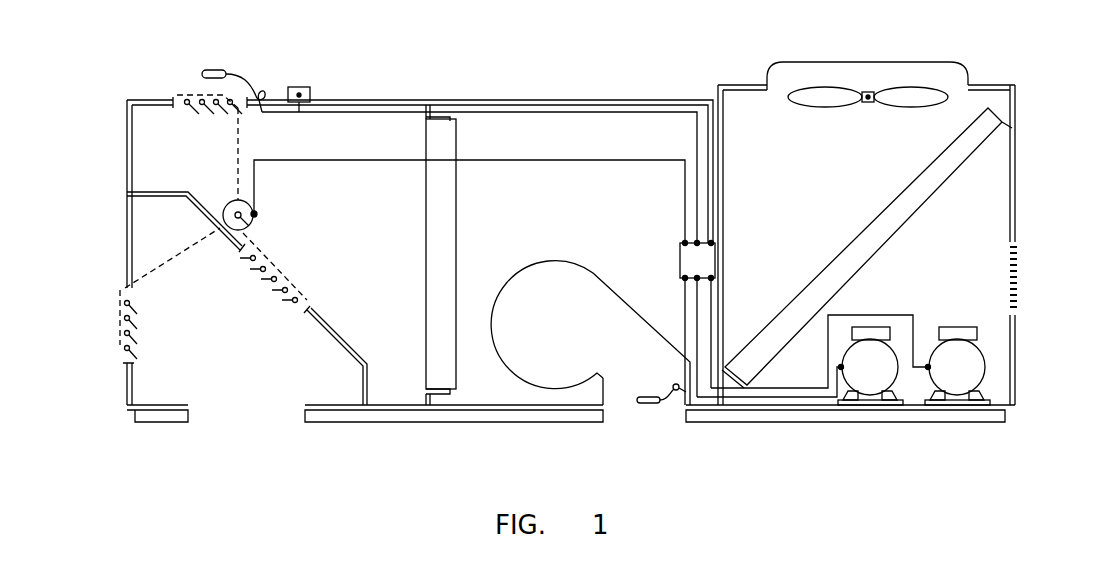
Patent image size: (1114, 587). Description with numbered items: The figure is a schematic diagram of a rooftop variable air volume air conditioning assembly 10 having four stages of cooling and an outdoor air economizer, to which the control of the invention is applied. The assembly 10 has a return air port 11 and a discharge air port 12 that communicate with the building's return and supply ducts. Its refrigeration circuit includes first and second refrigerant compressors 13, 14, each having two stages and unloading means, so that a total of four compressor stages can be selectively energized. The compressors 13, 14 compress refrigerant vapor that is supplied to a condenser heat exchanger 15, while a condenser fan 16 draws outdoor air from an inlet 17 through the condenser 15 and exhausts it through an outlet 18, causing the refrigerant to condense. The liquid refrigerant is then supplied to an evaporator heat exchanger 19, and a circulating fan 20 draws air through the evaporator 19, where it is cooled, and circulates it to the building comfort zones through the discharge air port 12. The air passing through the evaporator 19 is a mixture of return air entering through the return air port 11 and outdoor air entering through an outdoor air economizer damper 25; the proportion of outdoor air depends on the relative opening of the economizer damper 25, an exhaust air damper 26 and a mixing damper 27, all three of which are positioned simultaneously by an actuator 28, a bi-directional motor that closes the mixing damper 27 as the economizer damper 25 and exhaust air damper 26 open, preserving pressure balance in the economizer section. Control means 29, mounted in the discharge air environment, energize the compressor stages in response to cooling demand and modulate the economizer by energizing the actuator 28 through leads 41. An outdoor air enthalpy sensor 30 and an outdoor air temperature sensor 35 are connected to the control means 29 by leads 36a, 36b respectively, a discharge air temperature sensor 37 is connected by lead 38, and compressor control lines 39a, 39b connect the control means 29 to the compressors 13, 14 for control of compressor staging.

The air conditioning assembly 10 is at (1021, 162).
The return air port 11 is at (247, 412).
The discharge air port 12 is at (655, 418).
The first refrigerant compressor 13 is at (853, 356).
The second refrigerant compressor 14 is at (978, 365).
The condenser heat exchanger 15 is at (862, 260).
The condenser fan 16 is at (868, 102).
The inlet 17 is at (1018, 272).
The outlet 18 is at (886, 62).
The evaporator heat exchanger 19 is at (456, 214).
The circulating fan 20 is at (562, 258).
The outdoor air economizer damper 25 is at (178, 98).
The exhaust air damper 26 is at (134, 350).
The mixing damper 27 is at (270, 284).
The actuator 28 is at (226, 205).
The control means 29 is at (680, 258).
The outdoor air enthalpy sensor 30 is at (300, 87).
The outdoor air temperature sensor 35 is at (210, 70).
The lead 36a is at (345, 104).
The lead 36b is at (358, 113).
The discharge air temperature sensor 37 is at (648, 396).
The lead 38 is at (685, 301).
The compressor control line 39a is at (773, 397).
The compressor control line 39b is at (815, 388).
The leads 41 is at (297, 161).